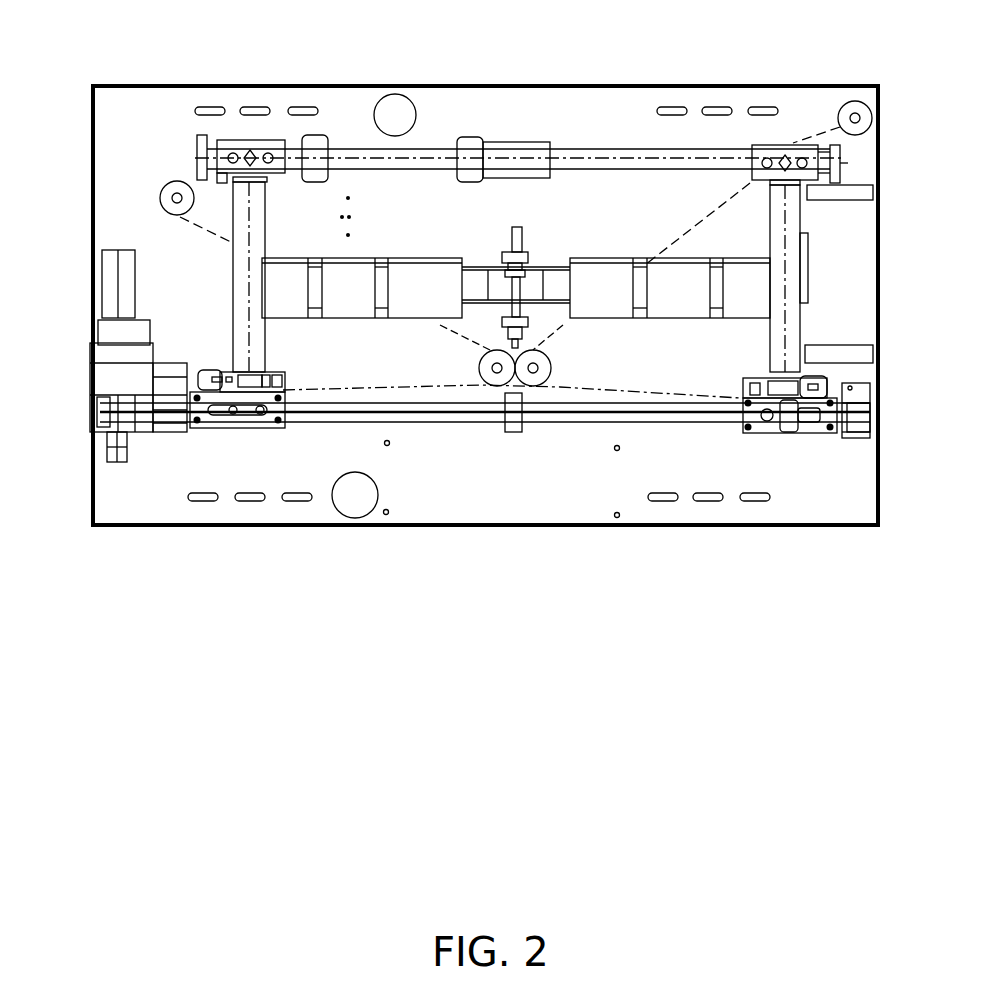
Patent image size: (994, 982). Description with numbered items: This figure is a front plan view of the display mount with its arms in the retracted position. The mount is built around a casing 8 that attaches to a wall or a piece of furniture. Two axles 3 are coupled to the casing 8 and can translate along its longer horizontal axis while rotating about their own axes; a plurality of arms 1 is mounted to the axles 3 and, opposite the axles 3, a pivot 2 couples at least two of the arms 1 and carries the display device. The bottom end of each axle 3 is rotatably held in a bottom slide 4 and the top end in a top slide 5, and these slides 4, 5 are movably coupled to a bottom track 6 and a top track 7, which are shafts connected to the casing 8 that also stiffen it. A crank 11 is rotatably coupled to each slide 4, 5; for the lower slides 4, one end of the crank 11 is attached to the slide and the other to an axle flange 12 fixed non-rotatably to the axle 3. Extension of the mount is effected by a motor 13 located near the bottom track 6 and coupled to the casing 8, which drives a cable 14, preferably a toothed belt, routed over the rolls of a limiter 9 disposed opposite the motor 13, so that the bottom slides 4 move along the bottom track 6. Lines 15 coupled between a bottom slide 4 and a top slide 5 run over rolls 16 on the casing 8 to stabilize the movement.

The arms 1 is at (682, 278).
The pivot 2 is at (522, 232).
The axles 3 is at (775, 217).
The bottom slides 4 is at (213, 420).
The top slides 5 is at (226, 150).
The bottom track 6 is at (400, 413).
The top track 7 is at (298, 153).
The casing 8 is at (113, 115).
The limiter 9 is at (846, 435).
The crank 11 is at (265, 378).
The axle flange 12 is at (237, 422).
The motor 13 is at (113, 287).
The cable 14 is at (557, 416).
The lines 15 is at (208, 227).
The rolls 16 is at (170, 195).